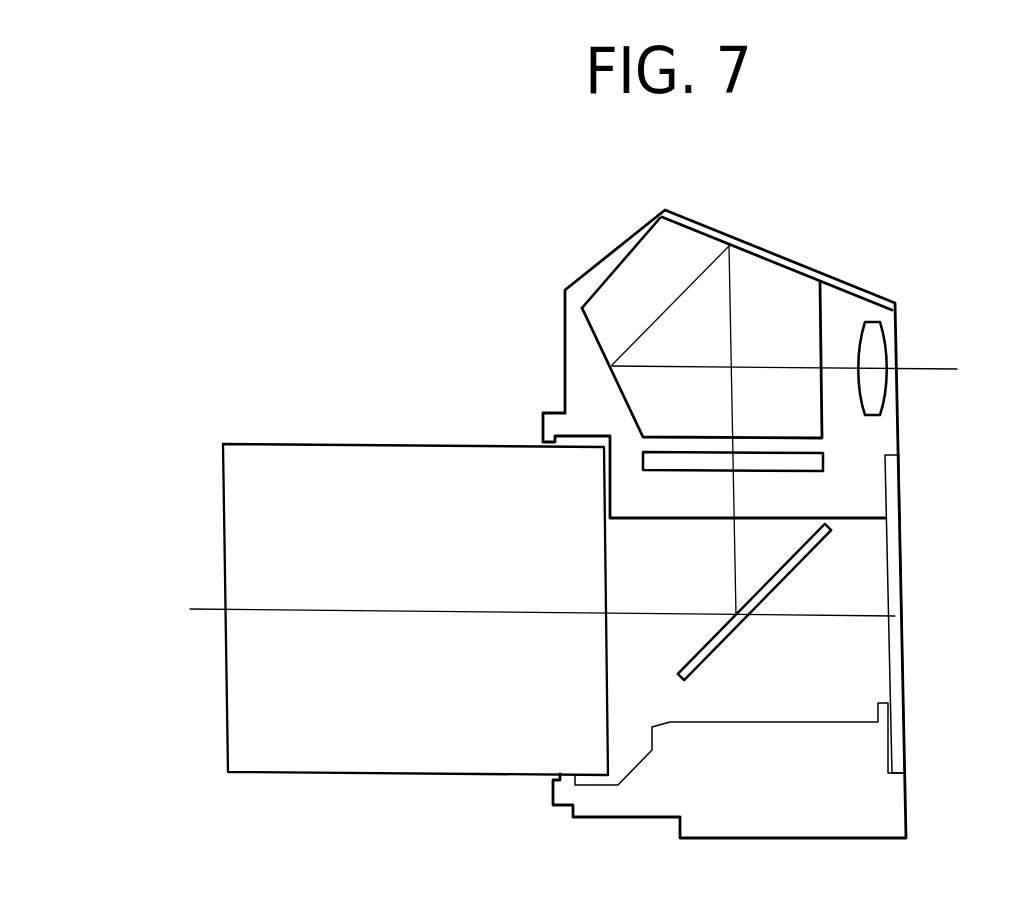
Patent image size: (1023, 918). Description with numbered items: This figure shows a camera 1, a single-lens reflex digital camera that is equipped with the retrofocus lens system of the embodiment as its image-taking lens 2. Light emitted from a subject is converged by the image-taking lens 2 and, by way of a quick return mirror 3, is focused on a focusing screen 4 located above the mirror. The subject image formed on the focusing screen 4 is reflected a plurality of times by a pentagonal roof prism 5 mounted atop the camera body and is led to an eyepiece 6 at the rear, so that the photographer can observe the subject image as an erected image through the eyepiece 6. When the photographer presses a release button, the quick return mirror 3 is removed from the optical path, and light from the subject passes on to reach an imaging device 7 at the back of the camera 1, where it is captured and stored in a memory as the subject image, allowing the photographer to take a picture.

The camera 1 is at (272, 232).
The image-taking lens 2 is at (307, 468).
The quick return mirror 3 is at (705, 653).
The focusing screen 4 is at (825, 463).
The pentagonal roof prism 5 is at (692, 250).
The eyepiece 6 is at (872, 340).
The imaging device 7 is at (897, 656).